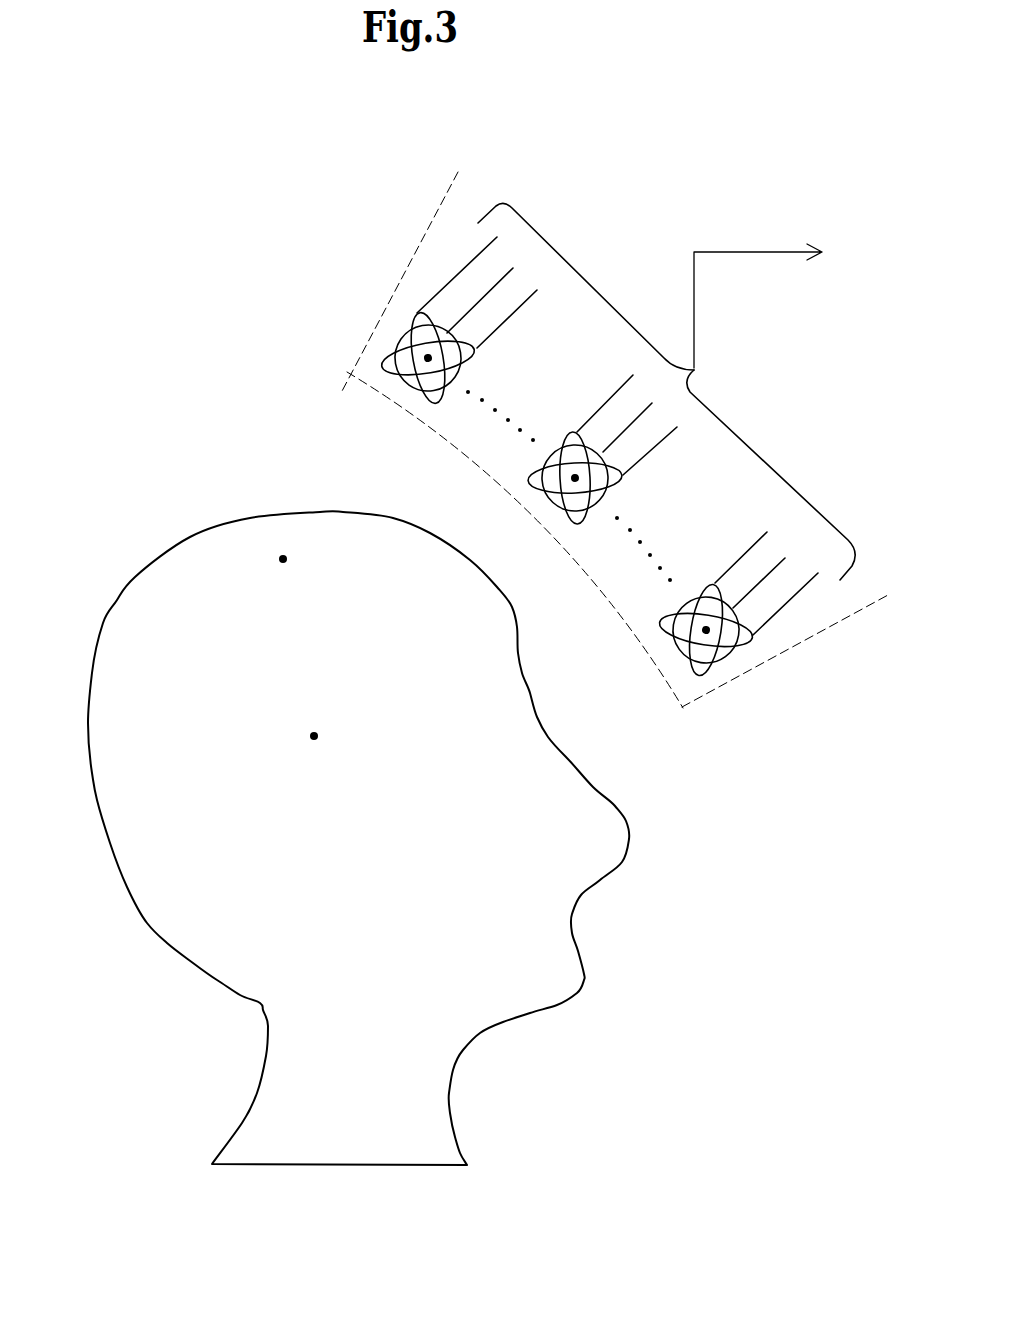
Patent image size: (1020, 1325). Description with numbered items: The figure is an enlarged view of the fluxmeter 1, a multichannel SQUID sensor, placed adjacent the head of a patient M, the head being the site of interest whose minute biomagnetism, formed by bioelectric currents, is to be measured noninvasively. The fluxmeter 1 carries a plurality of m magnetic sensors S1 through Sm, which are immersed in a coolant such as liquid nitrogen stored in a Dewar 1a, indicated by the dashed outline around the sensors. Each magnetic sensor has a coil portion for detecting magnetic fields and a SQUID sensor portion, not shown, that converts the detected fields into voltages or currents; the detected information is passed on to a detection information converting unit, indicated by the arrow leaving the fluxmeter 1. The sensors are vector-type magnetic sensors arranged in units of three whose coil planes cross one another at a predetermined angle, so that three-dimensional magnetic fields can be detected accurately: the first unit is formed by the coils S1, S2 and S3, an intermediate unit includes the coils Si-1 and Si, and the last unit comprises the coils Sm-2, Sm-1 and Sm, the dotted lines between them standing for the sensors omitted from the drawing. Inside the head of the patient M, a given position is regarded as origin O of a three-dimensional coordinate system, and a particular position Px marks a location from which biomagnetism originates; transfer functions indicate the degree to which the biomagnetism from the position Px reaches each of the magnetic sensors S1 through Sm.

The fluxmeter 1 is at (420, 165).
The Dewar 1a is at (410, 257).
The magnetic sensor S1 is at (396, 330).
The magnetic sensor S2 is at (380, 372).
The magnetic sensor S3 is at (437, 405).
The magnetic sensor Si-1 is at (575, 432).
The magnetic sensor Si is at (610, 512).
The magnetic sensor Sm-2 is at (657, 620).
The magnetic sensor Sm-1 is at (737, 657).
The magnetic sensor Sm is at (700, 675).
The patient M is at (577, 942).
The origin O is at (309, 736).
The particular position Px is at (283, 559).